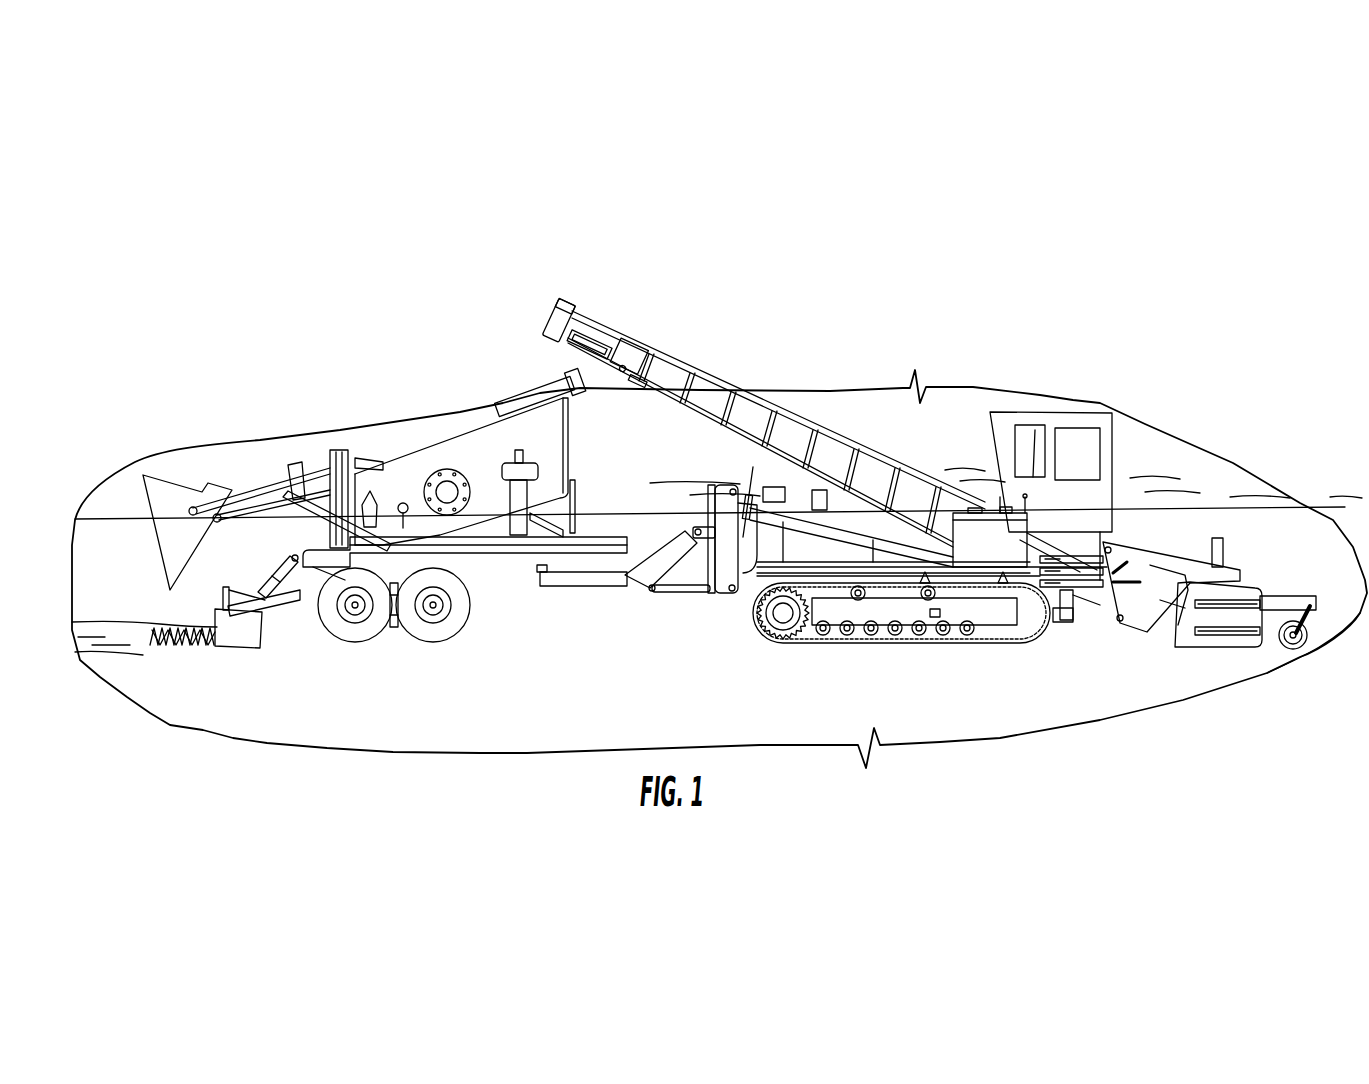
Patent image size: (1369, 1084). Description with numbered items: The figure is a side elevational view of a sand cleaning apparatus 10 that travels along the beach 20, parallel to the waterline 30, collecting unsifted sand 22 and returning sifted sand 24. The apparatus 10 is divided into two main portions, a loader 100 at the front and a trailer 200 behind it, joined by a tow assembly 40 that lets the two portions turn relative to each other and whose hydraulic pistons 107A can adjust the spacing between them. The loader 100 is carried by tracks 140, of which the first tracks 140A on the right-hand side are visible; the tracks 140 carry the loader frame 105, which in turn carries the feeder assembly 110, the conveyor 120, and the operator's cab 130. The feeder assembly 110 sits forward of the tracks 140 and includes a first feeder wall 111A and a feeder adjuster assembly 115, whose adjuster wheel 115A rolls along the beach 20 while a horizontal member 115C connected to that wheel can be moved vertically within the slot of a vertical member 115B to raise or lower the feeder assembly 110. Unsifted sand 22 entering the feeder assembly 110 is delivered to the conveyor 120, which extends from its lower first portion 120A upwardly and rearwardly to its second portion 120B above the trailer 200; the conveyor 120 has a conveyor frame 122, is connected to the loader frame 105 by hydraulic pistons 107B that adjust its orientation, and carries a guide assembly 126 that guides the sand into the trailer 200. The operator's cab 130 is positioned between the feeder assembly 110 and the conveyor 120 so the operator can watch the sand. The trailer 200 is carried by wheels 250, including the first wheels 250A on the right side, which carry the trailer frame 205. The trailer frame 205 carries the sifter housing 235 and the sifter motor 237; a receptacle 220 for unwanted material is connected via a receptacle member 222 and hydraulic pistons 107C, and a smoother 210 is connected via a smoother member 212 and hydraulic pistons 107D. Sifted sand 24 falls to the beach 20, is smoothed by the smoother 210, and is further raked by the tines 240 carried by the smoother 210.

The sand cleaning apparatus 10 is at (552, 200).
The beach 20 is at (1012, 717).
The unsifted sand 22 is at (1350, 626).
The sifted sand 24 is at (140, 651).
The waterline 30 is at (1137, 505).
The tow assembly 40 is at (597, 585).
The loader 100 is at (977, 318).
The loader frame 105 is at (983, 577).
The hydraulic pistons 107A is at (677, 588).
The hydraulic pistons 107B is at (713, 513).
The hydraulic pistons 107C is at (247, 503).
The hydraulic pistons 107D is at (278, 565).
The feeder assembly 110 is at (1245, 525).
The first feeder wall 111A is at (1213, 612).
The feeder adjuster assembly 115 is at (1315, 537).
The adjuster wheel 115A is at (1296, 650).
The vertical member 115B is at (1212, 548).
The horizontal member 115C is at (1290, 578).
The conveyor 120 is at (757, 400).
The first portion 120A is at (1080, 600).
The second portion 120B is at (627, 368).
The conveyor frame 122 is at (700, 415).
The guide assembly 126 is at (592, 343).
The operator's cab 130 is at (1073, 413).
The tracks 140 is at (830, 655).
The first tracks 140A is at (908, 648).
The trailer 200 is at (424, 318).
The trailer frame 205 is at (487, 560).
The smoother 210 is at (242, 652).
The smoother member 212 is at (292, 606).
The receptacle 220 is at (160, 540).
The receptacle member 222 is at (268, 503).
The sifter housing 235 is at (387, 490).
The sifter motor 237 is at (445, 497).
The tines 240 is at (183, 648).
The wheels 250 is at (405, 658).
The first wheels 250A is at (436, 642).